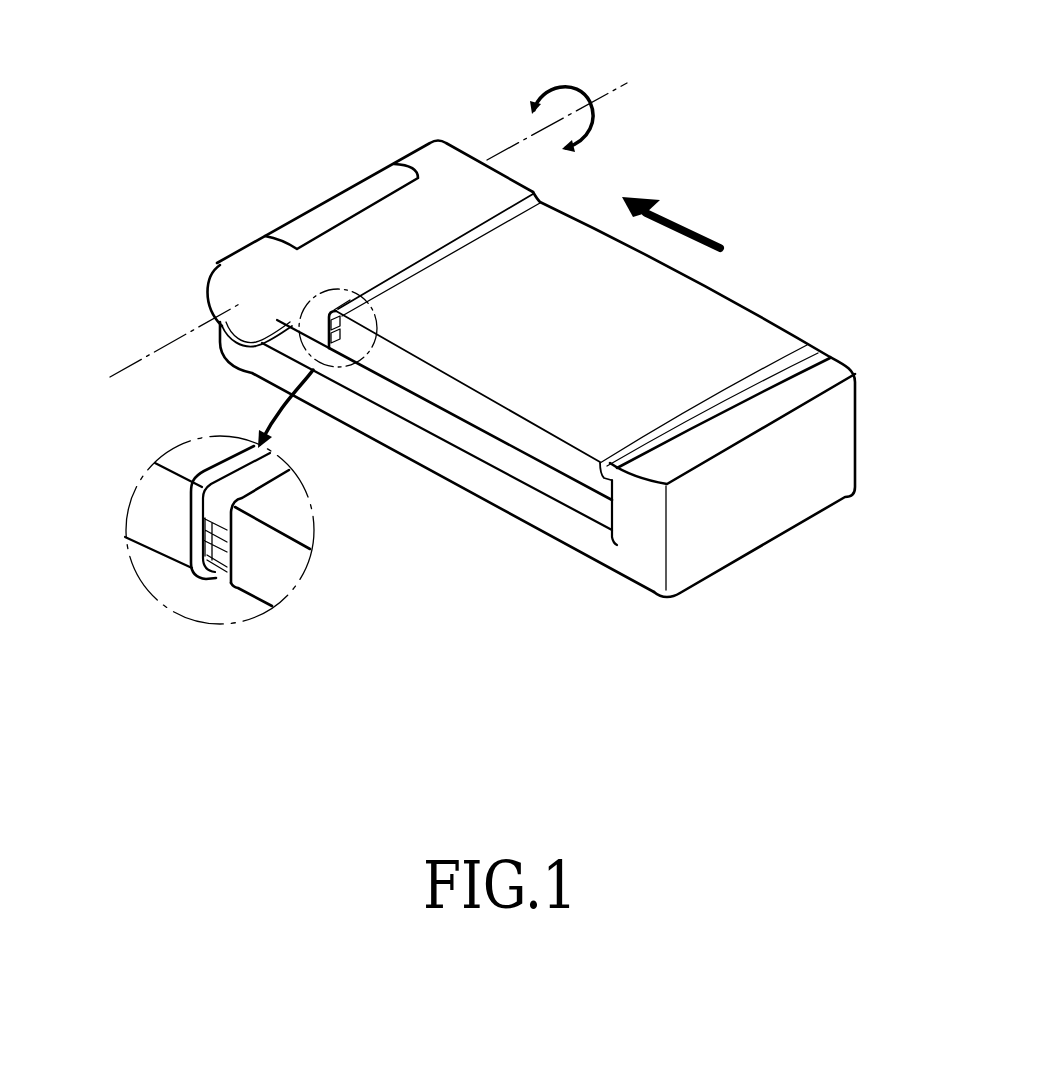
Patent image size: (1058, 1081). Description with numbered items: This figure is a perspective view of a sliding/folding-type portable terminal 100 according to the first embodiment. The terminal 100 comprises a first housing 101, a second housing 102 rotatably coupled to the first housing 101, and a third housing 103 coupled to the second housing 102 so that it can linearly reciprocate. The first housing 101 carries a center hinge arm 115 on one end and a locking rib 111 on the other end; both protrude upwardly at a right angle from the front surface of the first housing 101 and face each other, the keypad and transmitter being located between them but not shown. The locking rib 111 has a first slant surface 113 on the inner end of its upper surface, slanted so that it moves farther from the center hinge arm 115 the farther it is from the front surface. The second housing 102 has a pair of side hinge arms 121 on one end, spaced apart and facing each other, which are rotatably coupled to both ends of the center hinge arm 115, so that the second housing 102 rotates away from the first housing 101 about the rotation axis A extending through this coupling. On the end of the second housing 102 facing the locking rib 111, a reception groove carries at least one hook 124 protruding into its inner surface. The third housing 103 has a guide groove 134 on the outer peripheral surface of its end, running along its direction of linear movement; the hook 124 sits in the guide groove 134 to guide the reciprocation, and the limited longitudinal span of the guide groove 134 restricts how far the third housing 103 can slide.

The sliding/folding-type portable terminal 100 is at (88, 41).
The first housing 101 is at (526, 525).
The second housing 102 is at (447, 139).
The third housing 103 is at (756, 316).
The locking rib 111 is at (784, 502).
The first slant surface 113 is at (818, 357).
The center hinge arm 115 is at (336, 208).
The side hinge arms 121 is at (418, 157).
The hook 124 is at (200, 528).
The guide groove 134 is at (213, 568).
The rotation axis A is at (627, 83).